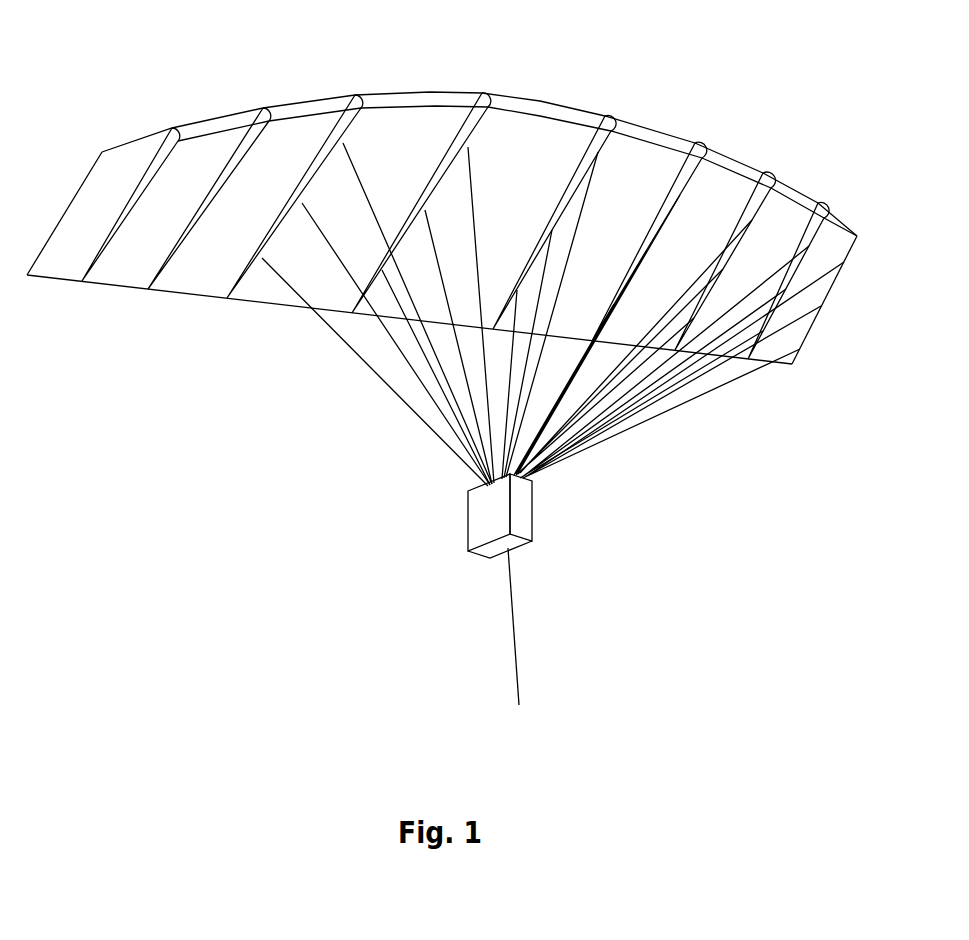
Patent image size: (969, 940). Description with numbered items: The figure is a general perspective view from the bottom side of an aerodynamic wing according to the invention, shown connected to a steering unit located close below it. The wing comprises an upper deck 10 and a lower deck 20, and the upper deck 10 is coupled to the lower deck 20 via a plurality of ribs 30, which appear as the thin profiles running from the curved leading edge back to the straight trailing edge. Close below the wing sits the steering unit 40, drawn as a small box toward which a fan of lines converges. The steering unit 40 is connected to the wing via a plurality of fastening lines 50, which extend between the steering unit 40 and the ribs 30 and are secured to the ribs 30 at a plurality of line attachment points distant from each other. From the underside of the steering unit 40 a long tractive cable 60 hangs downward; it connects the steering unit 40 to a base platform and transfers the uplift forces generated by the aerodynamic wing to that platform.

The upper deck 10 is at (540, 115).
The lower deck 20 is at (722, 198).
The ribs 30 is at (225, 177).
The steering unit 40 is at (483, 513).
The fastening lines 50 is at (685, 402).
The tractive cable 60 is at (512, 672).